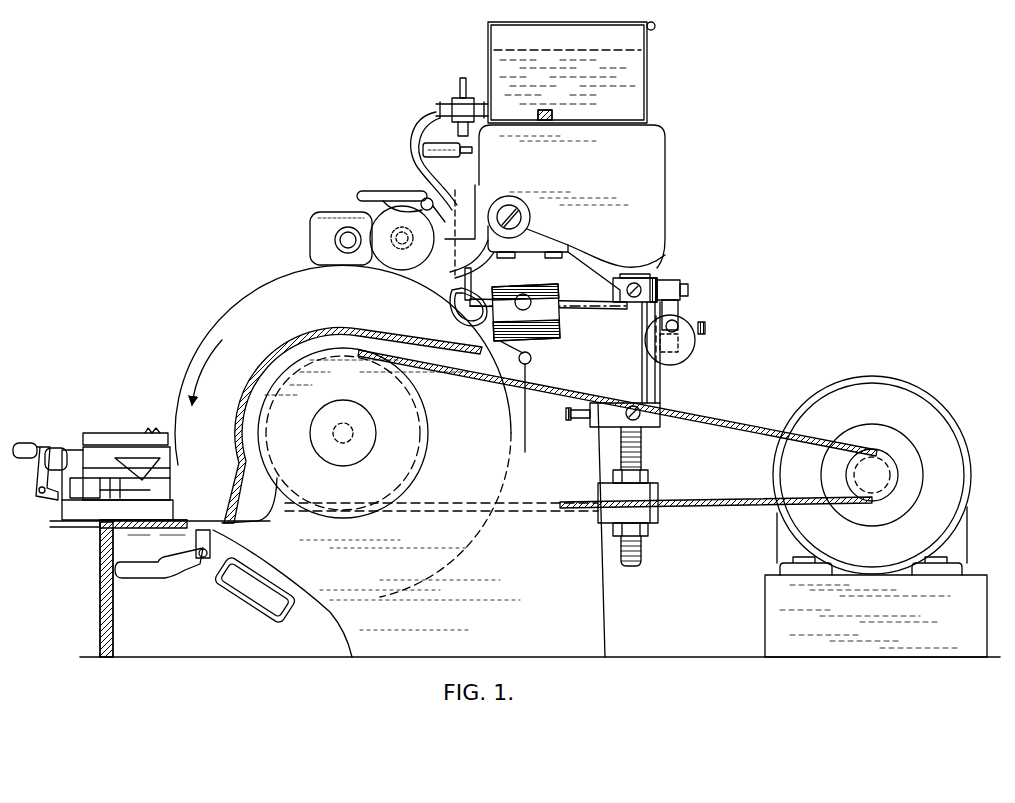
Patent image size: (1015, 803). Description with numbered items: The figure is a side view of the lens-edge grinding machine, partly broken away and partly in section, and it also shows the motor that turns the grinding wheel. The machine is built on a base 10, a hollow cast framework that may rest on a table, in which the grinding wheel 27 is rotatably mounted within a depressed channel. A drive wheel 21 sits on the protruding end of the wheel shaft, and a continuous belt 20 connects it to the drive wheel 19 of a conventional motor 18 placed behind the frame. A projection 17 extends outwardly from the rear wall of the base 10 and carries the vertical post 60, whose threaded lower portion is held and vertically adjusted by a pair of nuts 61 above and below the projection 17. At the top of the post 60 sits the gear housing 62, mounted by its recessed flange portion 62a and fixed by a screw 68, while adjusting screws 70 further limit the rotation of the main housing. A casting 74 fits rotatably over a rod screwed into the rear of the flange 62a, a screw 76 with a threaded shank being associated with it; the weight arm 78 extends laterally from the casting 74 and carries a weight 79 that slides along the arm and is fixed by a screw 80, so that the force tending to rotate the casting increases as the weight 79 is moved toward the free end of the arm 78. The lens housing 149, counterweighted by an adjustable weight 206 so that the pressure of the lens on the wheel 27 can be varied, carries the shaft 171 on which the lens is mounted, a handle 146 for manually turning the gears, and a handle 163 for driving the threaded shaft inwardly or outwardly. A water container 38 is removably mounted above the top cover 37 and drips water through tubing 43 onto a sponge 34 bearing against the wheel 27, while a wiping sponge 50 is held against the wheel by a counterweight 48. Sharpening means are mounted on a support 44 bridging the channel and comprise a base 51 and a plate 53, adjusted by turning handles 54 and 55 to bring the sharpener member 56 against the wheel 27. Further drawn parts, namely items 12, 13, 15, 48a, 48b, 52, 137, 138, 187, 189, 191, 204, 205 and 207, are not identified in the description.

The base 10 is at (421, 645).
The pedestal 12 is at (260, 504).
The wheel guard 13 is at (431, 482).
The feed belt 15 is at (300, 343).
The projection 17 is at (660, 484).
The motor 18 is at (972, 578).
The drive wheel 19 is at (890, 440).
The continuous belt 20 is at (722, 412).
The drive wheel 21 is at (428, 431).
The grinding wheel 27 is at (272, 283).
The sponge 34 is at (452, 308).
The top cover 37 is at (651, 148).
The water container 38 is at (640, 44).
The tubing 43 is at (436, 108).
The support 44 is at (108, 522).
The counterweight 48 is at (150, 575).
The pad 48a is at (284, 612).
The pivot 48b is at (203, 560).
The wiping sponge 50 is at (245, 586).
The base 51 is at (70, 513).
The slide 52 is at (152, 487).
The plate 53 is at (163, 455).
The handle 54 is at (45, 445).
The handle 55 is at (58, 452).
The sharpener member 56 is at (147, 420).
The vertical post 60 is at (645, 442).
The nuts 61 is at (650, 476).
The gear housing 62 is at (662, 258).
The recessed flange portion 62a is at (673, 281).
The screw 68 is at (634, 283).
The adjusting screws 70 is at (582, 420).
The casting 74 is at (679, 308).
The screw 76 is at (689, 287).
The weight arm 78 is at (696, 337).
The weight 79 is at (695, 344).
The screw 80 is at (706, 326).
The filter 137 is at (467, 153).
The tube 138 is at (420, 124).
The handle 146 is at (522, 214).
The lens housing 149 is at (320, 212).
The handle 163 is at (380, 208).
The shaft 171 is at (347, 228).
The bar 187 is at (370, 190).
The pin 189 is at (427, 197).
The link 191 is at (396, 204).
The pin 204 is at (472, 276).
The rod 205 is at (590, 310).
The adjustable weight 206 is at (562, 335).
The block 207 is at (527, 296).